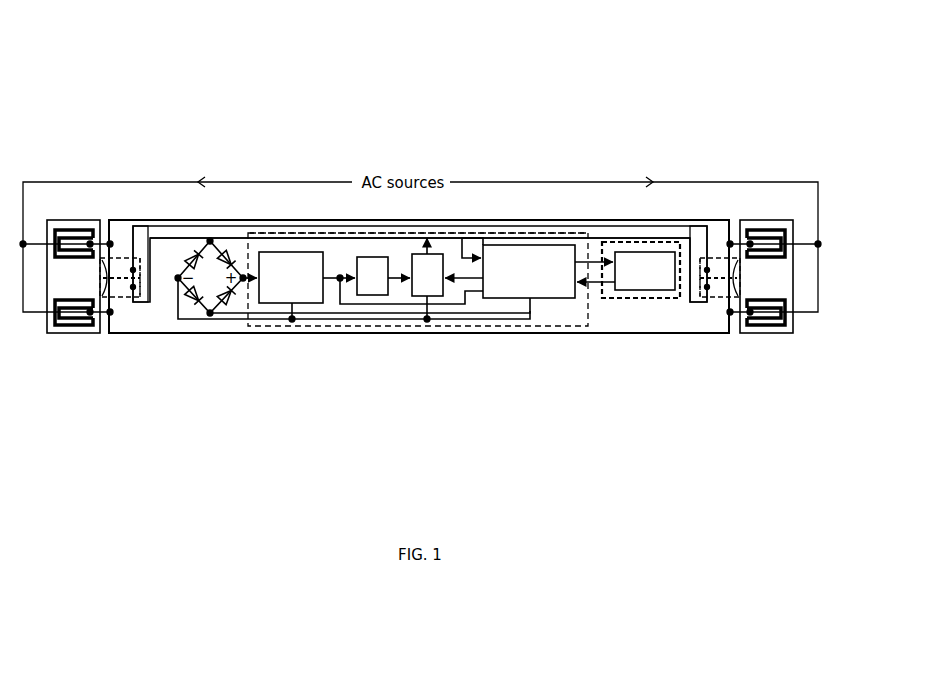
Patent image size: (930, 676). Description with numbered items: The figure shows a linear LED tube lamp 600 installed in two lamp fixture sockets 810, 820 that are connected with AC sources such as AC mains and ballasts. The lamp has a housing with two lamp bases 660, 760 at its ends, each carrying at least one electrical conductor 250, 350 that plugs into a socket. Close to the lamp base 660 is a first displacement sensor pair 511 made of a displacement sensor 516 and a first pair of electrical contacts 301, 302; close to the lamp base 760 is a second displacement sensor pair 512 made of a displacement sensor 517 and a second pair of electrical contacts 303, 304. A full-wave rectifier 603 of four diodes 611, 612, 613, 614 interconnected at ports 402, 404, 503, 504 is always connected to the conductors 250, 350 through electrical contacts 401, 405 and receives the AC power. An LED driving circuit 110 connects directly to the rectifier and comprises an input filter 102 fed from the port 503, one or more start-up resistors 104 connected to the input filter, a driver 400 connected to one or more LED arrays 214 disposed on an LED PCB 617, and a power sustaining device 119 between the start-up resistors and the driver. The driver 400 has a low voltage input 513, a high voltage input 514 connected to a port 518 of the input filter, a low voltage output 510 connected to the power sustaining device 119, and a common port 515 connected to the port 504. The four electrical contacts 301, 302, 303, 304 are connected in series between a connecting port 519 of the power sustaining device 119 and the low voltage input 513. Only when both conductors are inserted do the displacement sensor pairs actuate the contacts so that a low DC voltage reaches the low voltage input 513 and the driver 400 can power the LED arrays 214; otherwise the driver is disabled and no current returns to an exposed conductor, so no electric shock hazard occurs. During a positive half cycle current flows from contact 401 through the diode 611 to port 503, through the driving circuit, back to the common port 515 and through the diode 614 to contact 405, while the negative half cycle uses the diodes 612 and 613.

The input filter 102 is at (288, 251).
The start-up resistors 104 is at (368, 256).
The LED driving circuit 110 is at (525, 231).
The power sustaining device 119 is at (430, 298).
The LED arrays 214 is at (628, 299).
The electrical conductor 250 is at (74, 240).
The electrical contact 301 is at (133, 287).
The electrical contact 302 is at (132, 268).
The electrical contact 303 is at (706, 289).
The electrical contact 304 is at (707, 270).
The electrical conductor 350 is at (763, 316).
The driver 400 is at (542, 300).
The electrical contact 401 is at (109, 243).
The port 402 is at (211, 239).
The port 404 is at (211, 315).
The electrical contact 405 is at (731, 313).
The port 503 is at (247, 280).
The port 504 is at (177, 280).
The low voltage output 510 is at (457, 326).
The first displacement sensor pair 511 is at (140, 256).
The second displacement sensor pair 512 is at (697, 255).
The low voltage input 513 is at (467, 255).
The high voltage input 514 is at (459, 280).
The common port 515 is at (468, 296).
The displacement sensor 516 is at (101, 278).
The displacement sensor 517 is at (740, 278).
The port 518 is at (341, 280).
The connecting port 519 is at (431, 243).
The LLT lamp 600 is at (562, 217).
The full-wave rectifier 603 is at (221, 315).
The diode 611 is at (228, 256).
The diode 612 is at (227, 298).
The diode 613 is at (192, 256).
The diode 614 is at (194, 298).
The LED PCB 617 is at (633, 236).
The lamp base 660 is at (130, 217).
The lamp base 760 is at (720, 217).
The lamp fixture socket 810 is at (70, 337).
The lamp fixture socket 820 is at (759, 338).